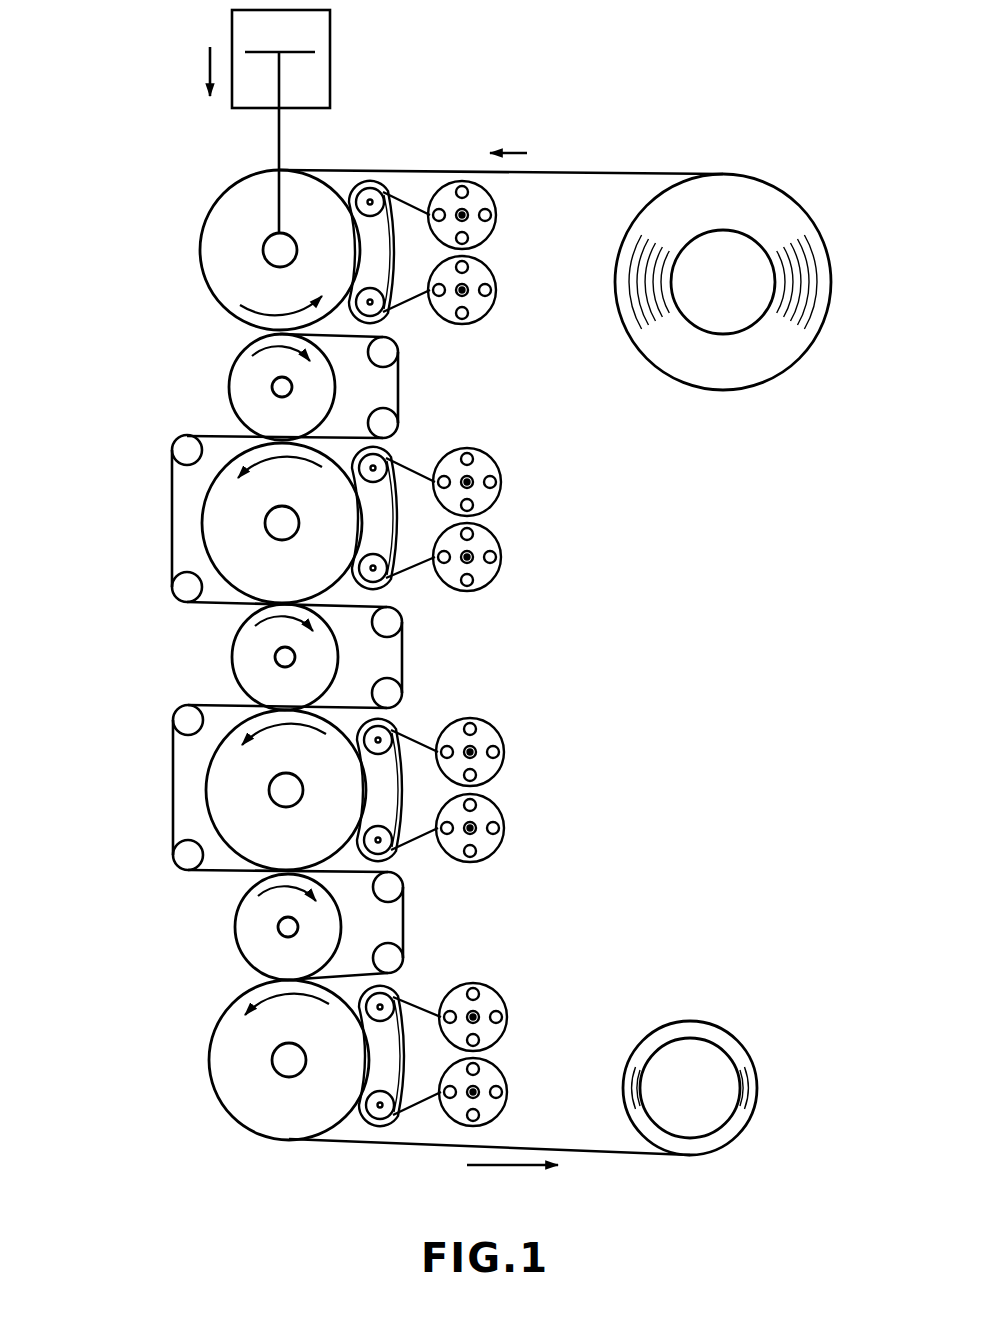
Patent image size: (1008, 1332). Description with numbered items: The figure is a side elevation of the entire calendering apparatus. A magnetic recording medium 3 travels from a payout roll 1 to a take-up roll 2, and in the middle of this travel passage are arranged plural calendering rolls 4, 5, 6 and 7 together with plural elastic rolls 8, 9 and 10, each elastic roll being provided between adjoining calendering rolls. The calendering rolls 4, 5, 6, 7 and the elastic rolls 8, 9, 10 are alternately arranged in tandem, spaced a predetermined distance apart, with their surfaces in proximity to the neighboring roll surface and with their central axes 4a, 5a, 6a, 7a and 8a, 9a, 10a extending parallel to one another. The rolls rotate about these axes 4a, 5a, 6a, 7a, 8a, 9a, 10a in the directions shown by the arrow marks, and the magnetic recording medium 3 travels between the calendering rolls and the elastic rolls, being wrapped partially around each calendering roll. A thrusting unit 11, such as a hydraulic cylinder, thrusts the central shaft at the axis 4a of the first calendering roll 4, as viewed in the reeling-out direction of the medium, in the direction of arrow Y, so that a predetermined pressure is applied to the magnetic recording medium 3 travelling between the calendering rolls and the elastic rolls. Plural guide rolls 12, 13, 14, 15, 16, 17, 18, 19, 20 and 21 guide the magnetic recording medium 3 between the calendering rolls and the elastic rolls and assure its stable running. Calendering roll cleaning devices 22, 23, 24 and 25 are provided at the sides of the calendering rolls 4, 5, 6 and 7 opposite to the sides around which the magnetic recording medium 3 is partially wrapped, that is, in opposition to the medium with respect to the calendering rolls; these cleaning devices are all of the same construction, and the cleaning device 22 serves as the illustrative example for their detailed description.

The payout roll 1 is at (745, 318).
The take-up roll 2 is at (705, 1057).
The magnetic recording medium 3 is at (606, 171).
The calendering roll 4 is at (247, 250).
The central axis of calendering roll 4a is at (272, 252).
The calendering roll 5 is at (231, 523).
The central axis of calendering roll 5a is at (274, 526).
The calendering roll 6 is at (237, 790).
The central axis of calendering roll 6a is at (278, 793).
The calendering roll 7 is at (254, 1060).
The central axis of calendering roll 7a is at (281, 1066).
The elastic roll 8 is at (240, 387).
The central axis of elastic roll 8a is at (274, 388).
The elastic roll 9 is at (238, 657).
The central axis of elastic roll 9a is at (277, 659).
The elastic roll 10 is at (234, 927).
The central axis of elastic roll 10a is at (281, 929).
The thrusting unit 11 is at (323, 42).
The guide roll 12 is at (396, 351).
The guide roll 13 is at (397, 424).
The guide roll 14 is at (178, 451).
The guide roll 15 is at (180, 588).
The guide roll 16 is at (401, 623).
The guide roll 17 is at (401, 694).
The guide roll 18 is at (179, 721).
The guide roll 19 is at (180, 856).
The guide roll 20 is at (402, 887).
The guide roll 21 is at (403, 958).
The calendering roll cleaning device 22 is at (506, 253).
The calendering roll cleaning device 23 is at (508, 522).
The calendering roll cleaning device 24 is at (512, 795).
The calendering roll cleaning device 25 is at (510, 1050).